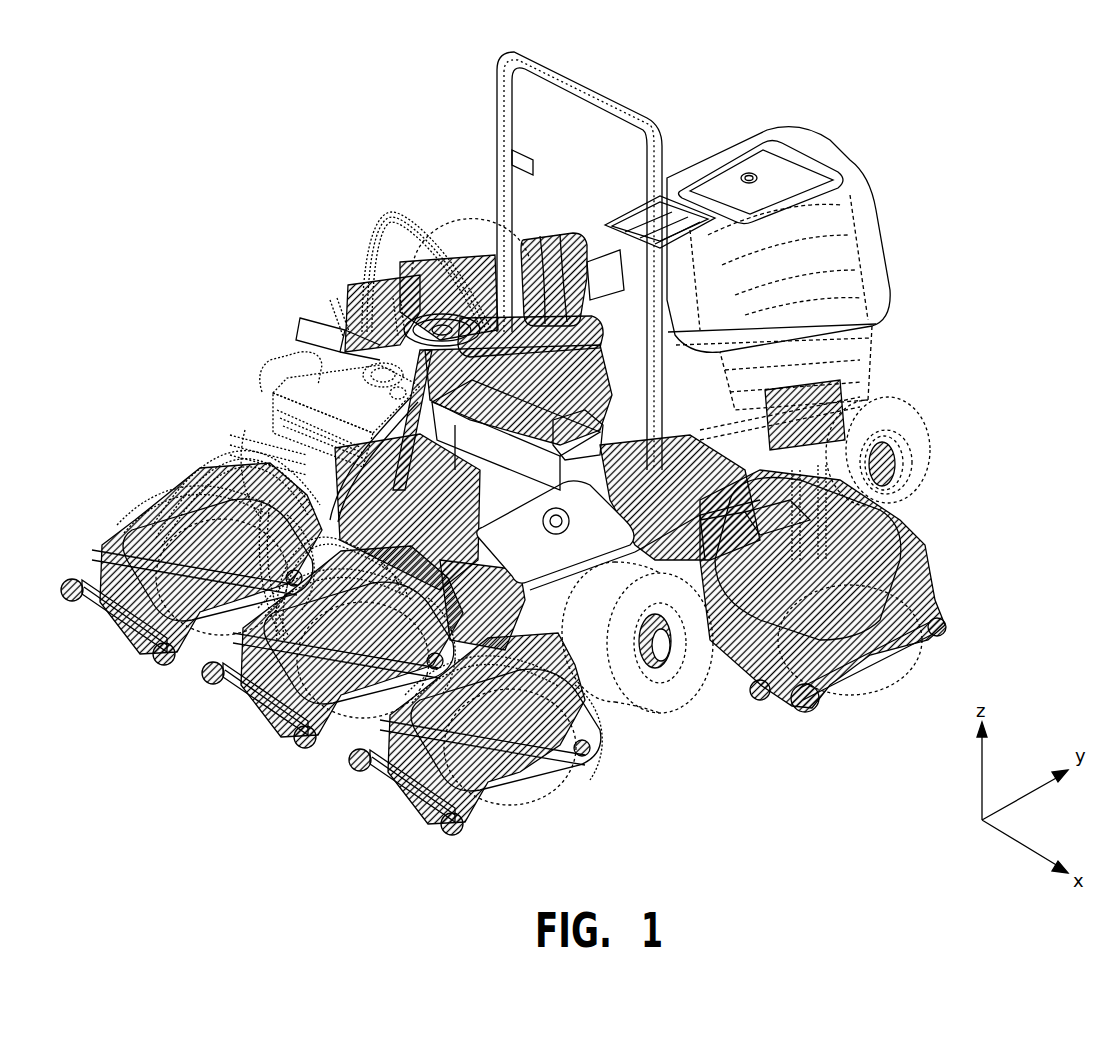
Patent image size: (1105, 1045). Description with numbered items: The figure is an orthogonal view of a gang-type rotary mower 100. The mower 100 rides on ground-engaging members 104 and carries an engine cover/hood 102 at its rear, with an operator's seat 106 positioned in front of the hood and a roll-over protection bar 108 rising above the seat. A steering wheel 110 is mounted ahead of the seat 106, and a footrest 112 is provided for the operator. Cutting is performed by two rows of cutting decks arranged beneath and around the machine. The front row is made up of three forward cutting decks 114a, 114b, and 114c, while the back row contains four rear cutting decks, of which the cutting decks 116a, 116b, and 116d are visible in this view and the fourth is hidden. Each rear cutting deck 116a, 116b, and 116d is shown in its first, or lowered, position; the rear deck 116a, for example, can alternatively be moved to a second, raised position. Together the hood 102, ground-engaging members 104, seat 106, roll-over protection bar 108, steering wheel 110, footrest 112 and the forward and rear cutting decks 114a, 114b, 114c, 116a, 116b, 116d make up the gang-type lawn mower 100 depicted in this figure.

The gang-type rotary mower 100 is at (258, 185).
The engine cover/hood 102 is at (787, 163).
The ground-engaging members 104 is at (633, 703).
The seat 106 is at (527, 270).
The roll-over protection bar 108 is at (603, 93).
The steering wheel 110 is at (412, 350).
The footrest 112 is at (430, 520).
The forward cutting deck 114a is at (543, 782).
The forward cutting deck 114b is at (253, 682).
The forward cutting deck 114c is at (122, 552).
The rear cutting deck 116a is at (926, 601).
The rear cutting deck 116b is at (747, 513).
The rear cutting deck 116d is at (322, 334).